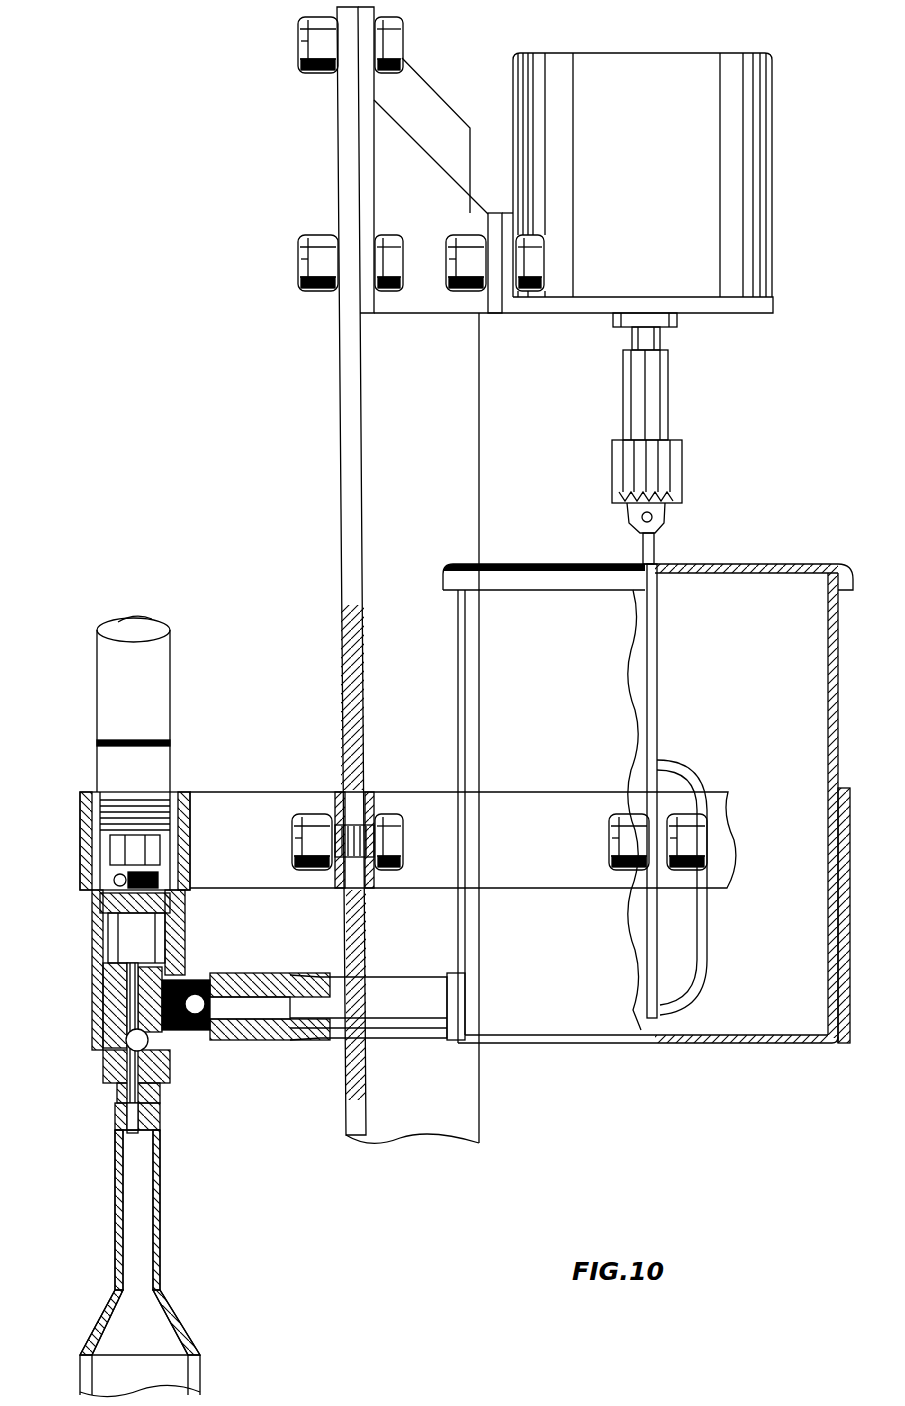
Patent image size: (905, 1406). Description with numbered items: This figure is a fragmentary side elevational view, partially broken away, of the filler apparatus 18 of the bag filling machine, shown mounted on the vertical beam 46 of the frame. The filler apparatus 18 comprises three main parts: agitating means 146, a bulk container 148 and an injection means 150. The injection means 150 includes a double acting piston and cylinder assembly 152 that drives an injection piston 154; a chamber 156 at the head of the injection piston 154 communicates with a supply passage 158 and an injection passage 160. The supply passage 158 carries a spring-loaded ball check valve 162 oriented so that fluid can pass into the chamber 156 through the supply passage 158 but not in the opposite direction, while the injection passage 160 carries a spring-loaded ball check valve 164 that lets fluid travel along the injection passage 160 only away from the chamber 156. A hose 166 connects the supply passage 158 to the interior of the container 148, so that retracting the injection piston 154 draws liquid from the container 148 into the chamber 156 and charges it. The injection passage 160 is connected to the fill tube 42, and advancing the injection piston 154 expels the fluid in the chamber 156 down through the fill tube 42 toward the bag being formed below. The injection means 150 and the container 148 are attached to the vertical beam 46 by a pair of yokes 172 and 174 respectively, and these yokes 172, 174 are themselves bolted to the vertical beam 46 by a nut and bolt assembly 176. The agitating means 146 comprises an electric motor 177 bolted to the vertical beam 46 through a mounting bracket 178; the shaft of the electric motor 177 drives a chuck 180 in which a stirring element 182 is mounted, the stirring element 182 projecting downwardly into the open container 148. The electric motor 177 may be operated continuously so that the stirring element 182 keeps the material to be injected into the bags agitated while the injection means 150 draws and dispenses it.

The filler apparatus 18 is at (268, 84).
The fill tube 42 is at (180, 1312).
The vertical beam 46 is at (337, 154).
The agitating means 146 is at (612, 53).
The bulk container 148 is at (722, 1043).
The injection means 150 is at (97, 690).
The double acting piston and cylinder assembly 152 is at (172, 708).
The injection piston 154 is at (108, 905).
The chamber 156 is at (110, 935).
The supply passage 158 is at (172, 1025).
The injection passage 160 is at (115, 1000).
The spring-loaded ball check valve 162 is at (200, 985).
The spring-loaded ball check valve 164 is at (125, 1043).
The hose 166 is at (290, 1032).
The yoke 172 is at (183, 792).
The yoke 174 is at (480, 792).
The nut and bolt assembly 176 is at (306, 814).
The electric motor 177 is at (696, 58).
The mounting bracket 178 is at (405, 130).
The chuck 180 is at (682, 466).
The stirring element 182 is at (703, 773).